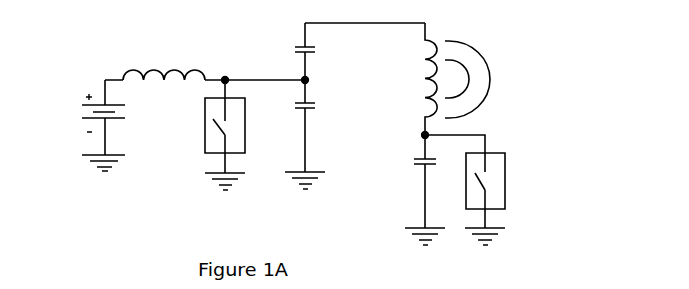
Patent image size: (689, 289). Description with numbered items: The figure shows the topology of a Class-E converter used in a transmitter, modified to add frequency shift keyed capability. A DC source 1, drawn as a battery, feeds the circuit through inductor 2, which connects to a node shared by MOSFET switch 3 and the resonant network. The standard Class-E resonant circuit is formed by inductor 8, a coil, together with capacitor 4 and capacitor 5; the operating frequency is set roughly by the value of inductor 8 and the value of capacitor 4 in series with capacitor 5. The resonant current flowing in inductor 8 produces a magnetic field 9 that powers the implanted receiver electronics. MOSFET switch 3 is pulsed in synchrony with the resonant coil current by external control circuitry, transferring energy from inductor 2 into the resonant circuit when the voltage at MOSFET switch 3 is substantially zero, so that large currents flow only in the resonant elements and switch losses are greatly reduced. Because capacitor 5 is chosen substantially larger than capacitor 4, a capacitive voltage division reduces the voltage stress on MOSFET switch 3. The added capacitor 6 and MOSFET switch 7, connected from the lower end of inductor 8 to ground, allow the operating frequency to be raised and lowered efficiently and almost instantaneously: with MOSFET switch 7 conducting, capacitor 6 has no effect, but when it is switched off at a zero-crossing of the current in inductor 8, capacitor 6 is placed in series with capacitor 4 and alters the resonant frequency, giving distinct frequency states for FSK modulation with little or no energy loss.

The battery / DC power source 1 is at (73, 107).
The inductor 2 is at (135, 64).
The MOSFET switch 3 is at (204, 140).
The capacitor 4 is at (290, 46).
The capacitor 5 is at (305, 114).
The capacitor 6 is at (410, 168).
The MOSFET switch 7 is at (505, 163).
The inductor 8 is at (410, 83).
The magnetic field 9 is at (487, 62).